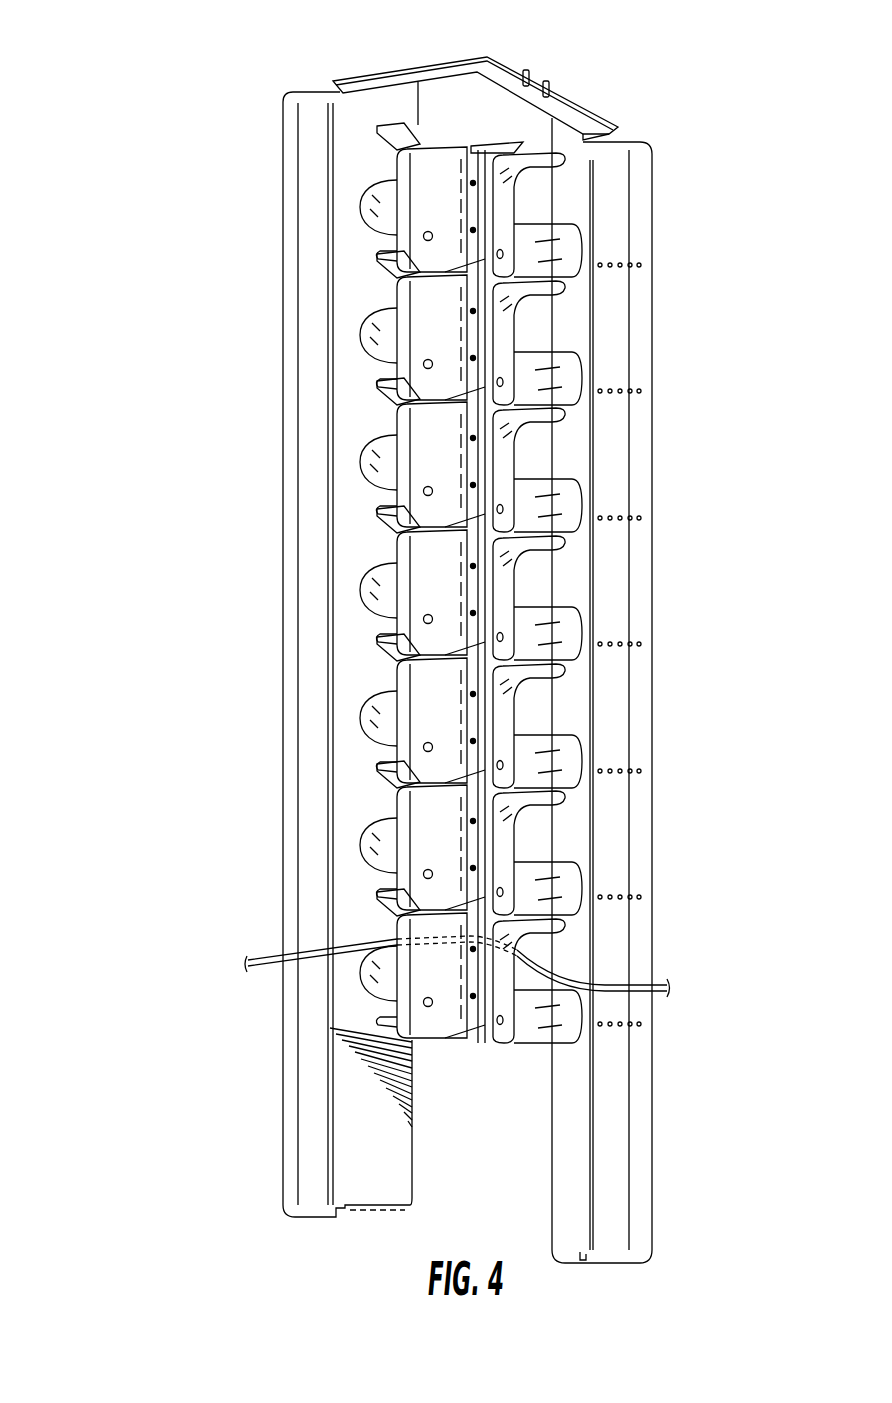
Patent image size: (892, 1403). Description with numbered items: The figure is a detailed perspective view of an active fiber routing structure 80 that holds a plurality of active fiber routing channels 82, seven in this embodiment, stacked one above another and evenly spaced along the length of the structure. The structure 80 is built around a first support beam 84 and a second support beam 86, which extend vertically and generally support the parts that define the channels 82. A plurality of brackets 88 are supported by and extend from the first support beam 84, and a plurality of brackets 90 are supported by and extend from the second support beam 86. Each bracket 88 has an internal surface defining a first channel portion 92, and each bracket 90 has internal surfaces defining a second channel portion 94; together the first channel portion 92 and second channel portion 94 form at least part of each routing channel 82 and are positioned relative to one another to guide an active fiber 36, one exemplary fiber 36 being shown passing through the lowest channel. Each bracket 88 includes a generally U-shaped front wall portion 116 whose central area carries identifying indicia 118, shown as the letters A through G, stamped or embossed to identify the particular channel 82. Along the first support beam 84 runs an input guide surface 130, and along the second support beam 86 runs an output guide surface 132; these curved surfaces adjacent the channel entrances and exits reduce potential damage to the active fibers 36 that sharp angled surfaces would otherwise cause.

The active fiber 36 is at (617, 990).
The structure 80 is at (658, 121).
The active fiber routing channel 82 is at (352, 182).
The first support beam 84 is at (360, 122).
The second support beam 86 is at (580, 140).
The bracket 88 is at (440, 157).
The bracket 90 is at (530, 157).
The first channel portion 92 is at (386, 190).
The second channel portion 94 is at (535, 196).
The front wall portion 116 is at (403, 1005).
The identifying indicia 118 is at (444, 998).
The input guide surface 130 is at (290, 92).
The output guide surface 132 is at (647, 182).